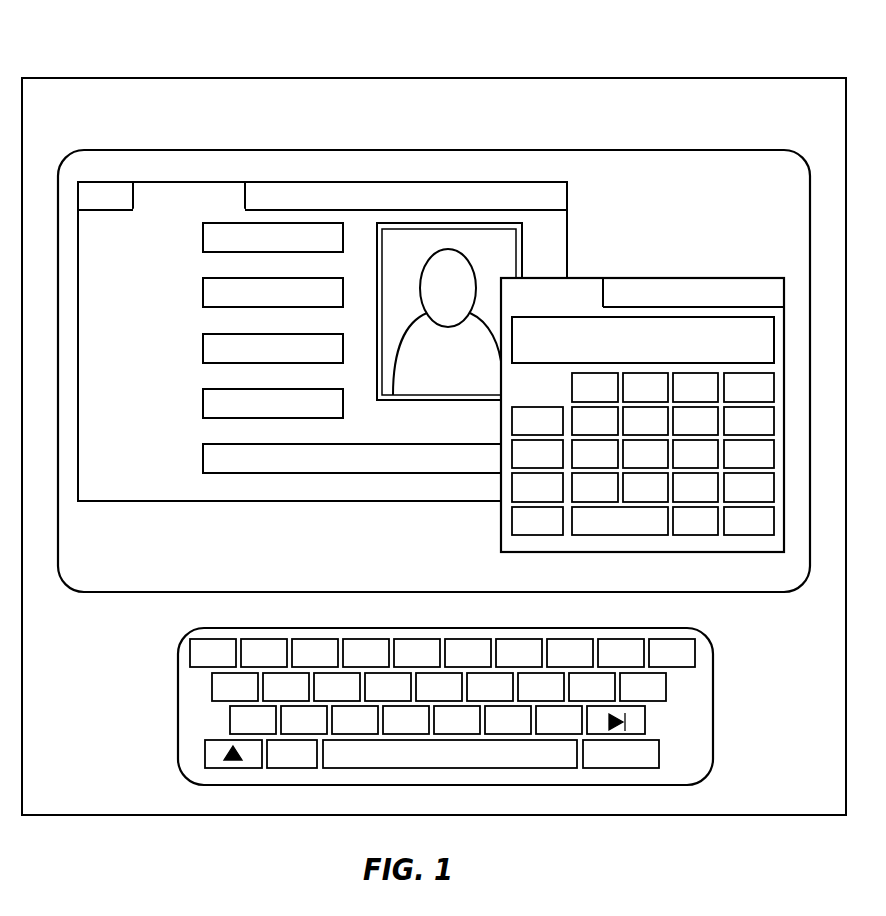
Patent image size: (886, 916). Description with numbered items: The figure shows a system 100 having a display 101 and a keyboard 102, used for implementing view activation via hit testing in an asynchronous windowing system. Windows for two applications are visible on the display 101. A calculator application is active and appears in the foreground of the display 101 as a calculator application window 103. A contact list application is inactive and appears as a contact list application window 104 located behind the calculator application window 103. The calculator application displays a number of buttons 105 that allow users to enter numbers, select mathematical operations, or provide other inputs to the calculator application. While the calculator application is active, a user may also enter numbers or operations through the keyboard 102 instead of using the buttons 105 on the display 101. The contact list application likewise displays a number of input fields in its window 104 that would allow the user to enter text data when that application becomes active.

The system 100 is at (224, 78).
The display 101 is at (637, 150).
The keyboard 102 is at (713, 705).
The calculator application window 103 is at (645, 278).
The contact list application window 104 is at (322, 501).
The buttons 105 is at (566, 537).